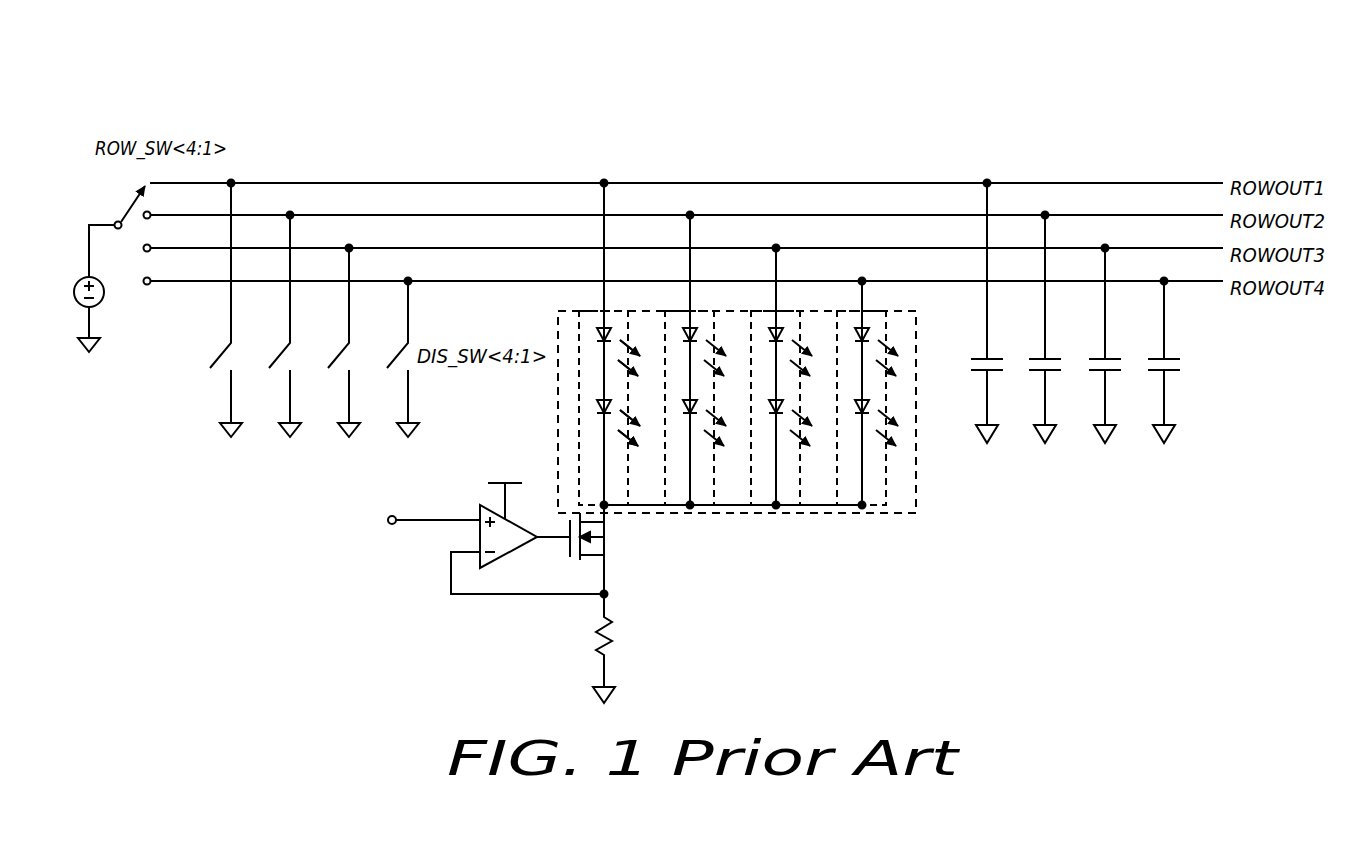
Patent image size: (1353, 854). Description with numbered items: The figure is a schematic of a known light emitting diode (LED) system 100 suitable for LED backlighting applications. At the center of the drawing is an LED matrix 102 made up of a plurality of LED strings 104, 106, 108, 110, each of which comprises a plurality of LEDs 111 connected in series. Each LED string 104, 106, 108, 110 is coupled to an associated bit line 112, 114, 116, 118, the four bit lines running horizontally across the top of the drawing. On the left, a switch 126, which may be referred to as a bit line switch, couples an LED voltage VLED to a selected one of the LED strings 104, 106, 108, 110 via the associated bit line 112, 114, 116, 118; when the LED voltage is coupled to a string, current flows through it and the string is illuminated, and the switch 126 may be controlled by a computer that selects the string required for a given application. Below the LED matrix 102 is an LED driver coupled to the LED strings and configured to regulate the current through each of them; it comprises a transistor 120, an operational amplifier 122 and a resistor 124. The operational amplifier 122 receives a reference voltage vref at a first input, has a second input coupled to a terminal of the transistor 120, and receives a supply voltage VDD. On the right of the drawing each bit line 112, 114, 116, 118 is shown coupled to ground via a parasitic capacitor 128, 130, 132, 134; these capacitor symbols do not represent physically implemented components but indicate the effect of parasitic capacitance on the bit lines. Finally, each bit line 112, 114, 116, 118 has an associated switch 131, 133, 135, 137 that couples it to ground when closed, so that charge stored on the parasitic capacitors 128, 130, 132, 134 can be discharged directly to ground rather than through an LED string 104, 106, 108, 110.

The light emitting diode (LED) system 100 is at (261, 60).
The LED matrix 102 is at (722, 515).
The LED string 104 is at (620, 449).
The LED string 106 is at (706, 449).
The LED string 108 is at (792, 449).
The LED string 110 is at (878, 449).
The LED 111 is at (594, 333).
The bit line 112 is at (380, 183).
The bit line 114 is at (433, 215).
The bit line 116 is at (492, 248).
The bit line 118 is at (557, 281).
The transistor 120 is at (585, 559).
The operational amplifier 122 is at (467, 528).
The resistor 124 is at (613, 627).
The switch 126 is at (122, 213).
The parasitic capacitor 128 is at (965, 363).
The parasitic capacitor 130 is at (1023, 363).
The parasitic capacitor 132 is at (1083, 363).
The parasitic capacitor 134 is at (1142, 363).
The switch 131 is at (214, 361).
The switch 133 is at (273, 361).
The switch 135 is at (332, 361).
The switch 137 is at (391, 361).